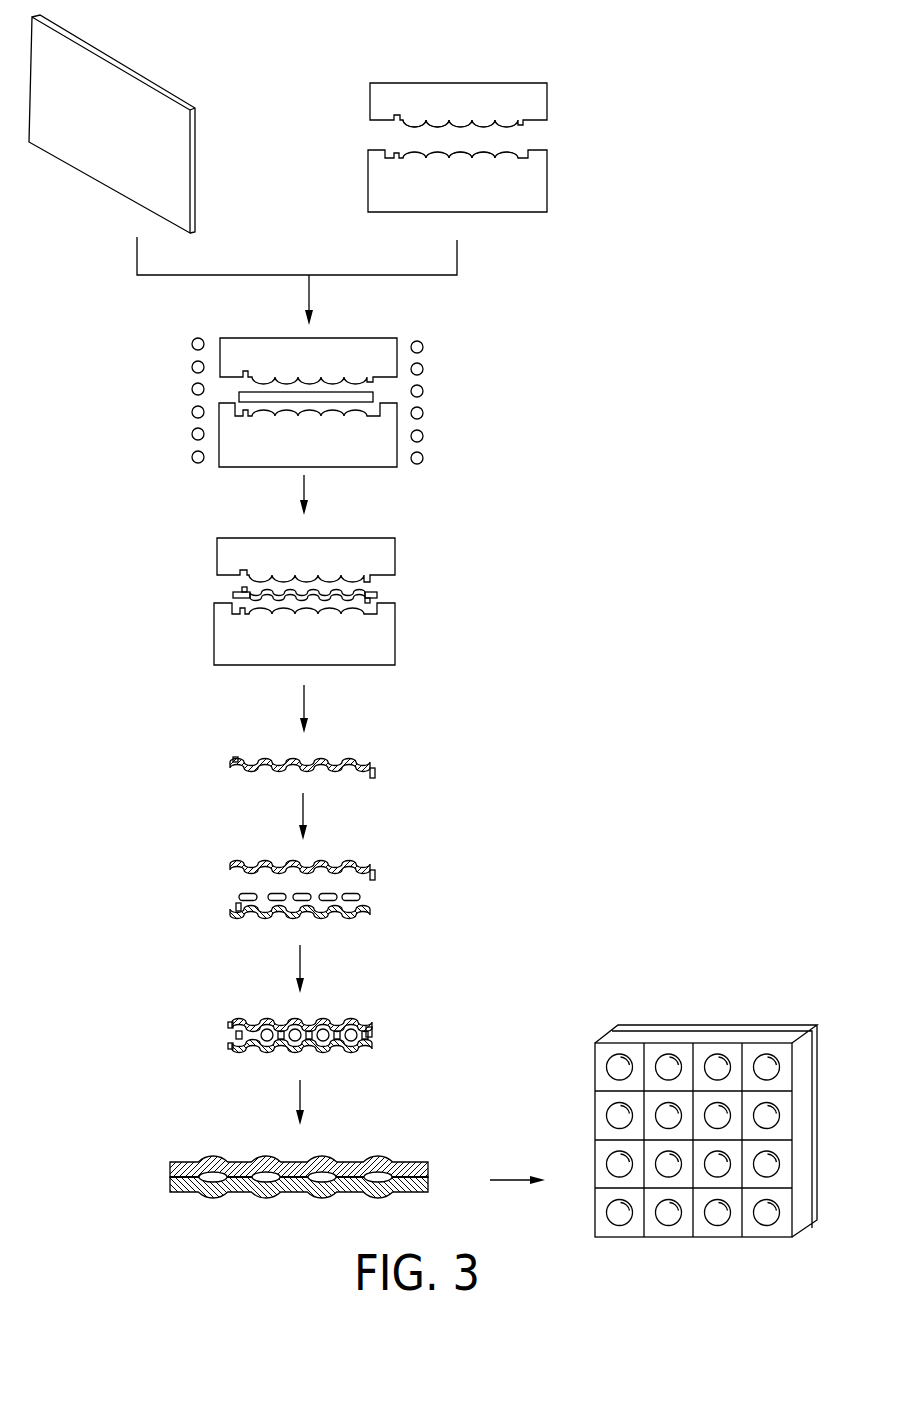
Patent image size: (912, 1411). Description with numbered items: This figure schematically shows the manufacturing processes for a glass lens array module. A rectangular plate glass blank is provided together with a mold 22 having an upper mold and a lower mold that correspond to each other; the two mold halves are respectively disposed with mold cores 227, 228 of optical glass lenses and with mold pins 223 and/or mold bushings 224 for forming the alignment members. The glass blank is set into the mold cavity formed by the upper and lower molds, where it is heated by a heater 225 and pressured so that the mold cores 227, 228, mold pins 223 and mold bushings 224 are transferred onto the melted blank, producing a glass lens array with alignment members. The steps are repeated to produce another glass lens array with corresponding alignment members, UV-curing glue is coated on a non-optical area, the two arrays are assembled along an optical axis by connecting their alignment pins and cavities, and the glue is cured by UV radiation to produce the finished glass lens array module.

The mold 22 is at (551, 154).
The mold pins 223 is at (525, 125).
The mold bushings 224 is at (520, 163).
The heater 225 is at (422, 391).
The mold core 227 is at (470, 120).
The mold core 228 is at (470, 163).